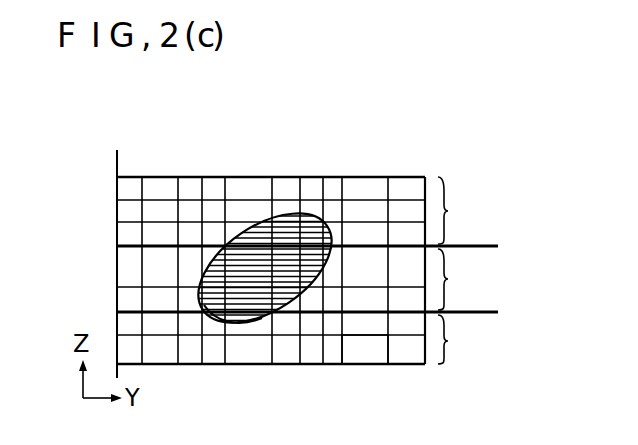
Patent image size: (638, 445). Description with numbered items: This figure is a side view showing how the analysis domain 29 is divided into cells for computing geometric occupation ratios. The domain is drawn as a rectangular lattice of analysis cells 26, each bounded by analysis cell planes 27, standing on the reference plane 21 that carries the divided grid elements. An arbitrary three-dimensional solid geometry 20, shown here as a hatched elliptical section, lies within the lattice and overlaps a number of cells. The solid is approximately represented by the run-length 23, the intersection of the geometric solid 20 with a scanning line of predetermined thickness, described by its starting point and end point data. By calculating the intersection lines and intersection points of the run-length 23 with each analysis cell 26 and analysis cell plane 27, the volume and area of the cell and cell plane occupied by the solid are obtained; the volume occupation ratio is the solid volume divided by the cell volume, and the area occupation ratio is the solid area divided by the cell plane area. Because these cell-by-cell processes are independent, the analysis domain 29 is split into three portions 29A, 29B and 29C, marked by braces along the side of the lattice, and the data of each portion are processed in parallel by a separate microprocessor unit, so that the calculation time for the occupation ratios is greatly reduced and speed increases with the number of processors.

The three-dimensional solid geometry 20 is at (265, 217).
The reference plane 21 is at (117, 160).
The run-length 23 is at (232, 327).
The analysis cell 26 is at (372, 351).
The analysis cell plane 27 is at (367, 176).
The analysis domain 29 is at (312, 168).
The first divided portion of analysis domain 29A is at (311, 211).
The second divided portion of analysis domain 29B is at (310, 280).
The third divided portion of analysis domain 29C is at (471, 339).